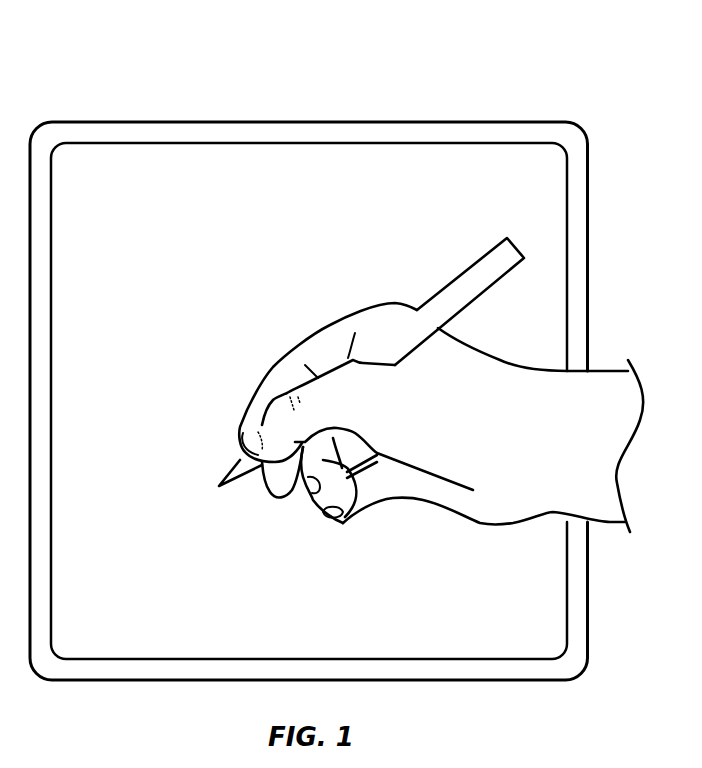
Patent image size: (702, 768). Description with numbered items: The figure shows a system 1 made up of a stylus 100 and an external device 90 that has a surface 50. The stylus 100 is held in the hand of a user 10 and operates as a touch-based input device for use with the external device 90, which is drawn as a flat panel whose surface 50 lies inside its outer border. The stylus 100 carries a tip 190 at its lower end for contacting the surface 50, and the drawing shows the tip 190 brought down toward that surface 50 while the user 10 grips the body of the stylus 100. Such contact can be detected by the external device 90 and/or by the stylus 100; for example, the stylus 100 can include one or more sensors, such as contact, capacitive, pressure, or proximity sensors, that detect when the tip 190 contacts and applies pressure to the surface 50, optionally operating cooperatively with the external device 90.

The system 1 is at (307, 344).
The user 10 is at (519, 364).
The surface 50 is at (423, 144).
The external device 90 is at (307, 122).
The stylus 100 is at (332, 365).
The tip 190 is at (227, 470).